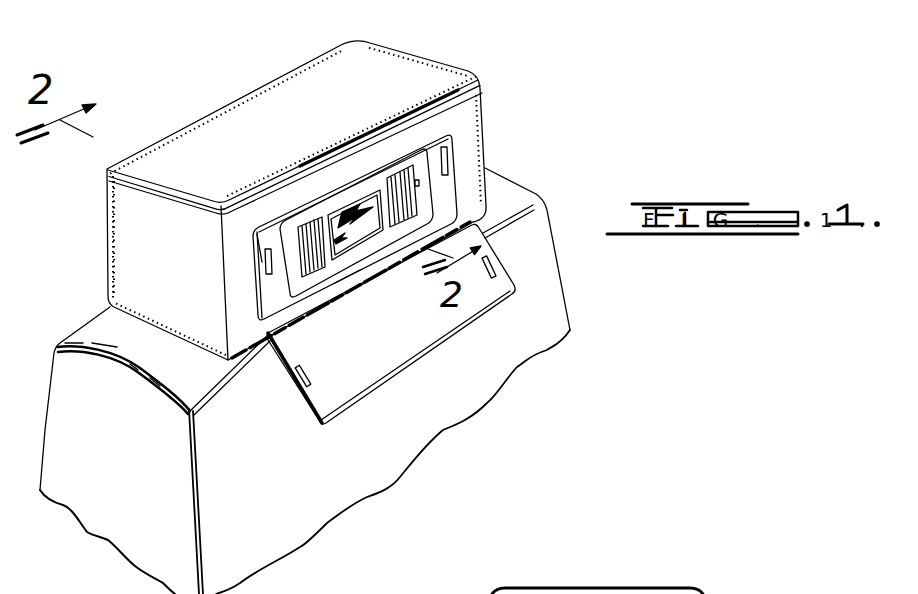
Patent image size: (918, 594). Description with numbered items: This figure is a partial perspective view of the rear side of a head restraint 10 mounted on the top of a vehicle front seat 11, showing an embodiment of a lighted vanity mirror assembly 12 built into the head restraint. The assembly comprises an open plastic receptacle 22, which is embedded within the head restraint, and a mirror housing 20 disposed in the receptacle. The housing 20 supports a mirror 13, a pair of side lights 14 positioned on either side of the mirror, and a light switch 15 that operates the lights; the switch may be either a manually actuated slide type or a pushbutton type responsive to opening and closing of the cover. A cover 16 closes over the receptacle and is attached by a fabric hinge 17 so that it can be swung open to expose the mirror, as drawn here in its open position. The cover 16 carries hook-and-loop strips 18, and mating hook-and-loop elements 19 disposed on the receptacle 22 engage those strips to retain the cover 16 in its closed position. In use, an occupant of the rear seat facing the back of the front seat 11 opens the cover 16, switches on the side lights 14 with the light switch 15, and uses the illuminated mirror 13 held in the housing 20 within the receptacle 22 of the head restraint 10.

The head restraint 10 is at (447, 47).
The vehicle front seat 11 is at (561, 243).
The lighted vanity mirror assembly 12 is at (462, 144).
The mirror 13 is at (356, 230).
The side lights 14 is at (311, 276).
The light switch 15 is at (420, 185).
The cover 16 is at (414, 358).
The fabric hinge 17 is at (347, 278).
The hook-and-loop strips 18 is at (296, 388).
The mating hook-and-loop elements 19 is at (264, 262).
The mirror housing 20 is at (420, 190).
The open plastic receptacle 22 is at (270, 237).